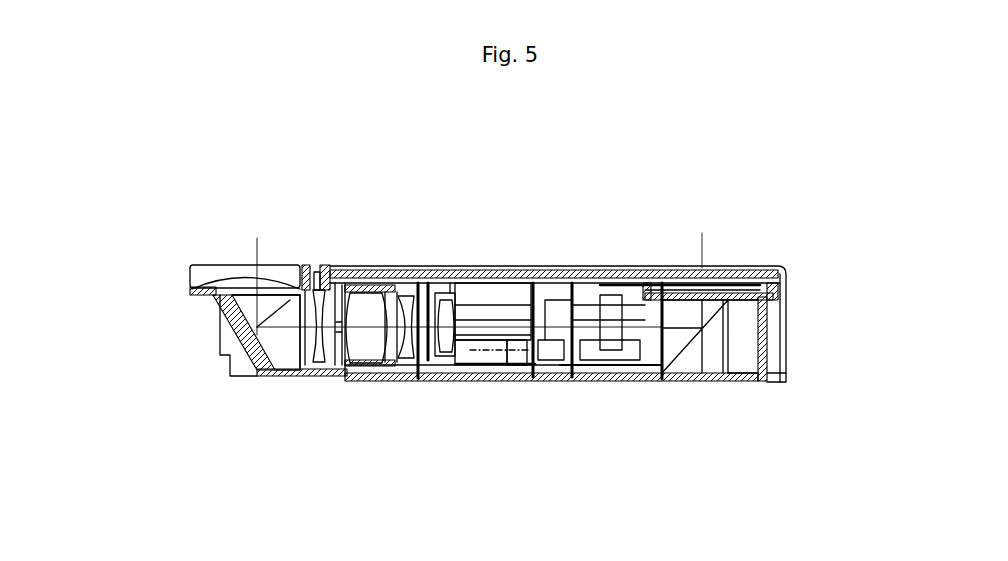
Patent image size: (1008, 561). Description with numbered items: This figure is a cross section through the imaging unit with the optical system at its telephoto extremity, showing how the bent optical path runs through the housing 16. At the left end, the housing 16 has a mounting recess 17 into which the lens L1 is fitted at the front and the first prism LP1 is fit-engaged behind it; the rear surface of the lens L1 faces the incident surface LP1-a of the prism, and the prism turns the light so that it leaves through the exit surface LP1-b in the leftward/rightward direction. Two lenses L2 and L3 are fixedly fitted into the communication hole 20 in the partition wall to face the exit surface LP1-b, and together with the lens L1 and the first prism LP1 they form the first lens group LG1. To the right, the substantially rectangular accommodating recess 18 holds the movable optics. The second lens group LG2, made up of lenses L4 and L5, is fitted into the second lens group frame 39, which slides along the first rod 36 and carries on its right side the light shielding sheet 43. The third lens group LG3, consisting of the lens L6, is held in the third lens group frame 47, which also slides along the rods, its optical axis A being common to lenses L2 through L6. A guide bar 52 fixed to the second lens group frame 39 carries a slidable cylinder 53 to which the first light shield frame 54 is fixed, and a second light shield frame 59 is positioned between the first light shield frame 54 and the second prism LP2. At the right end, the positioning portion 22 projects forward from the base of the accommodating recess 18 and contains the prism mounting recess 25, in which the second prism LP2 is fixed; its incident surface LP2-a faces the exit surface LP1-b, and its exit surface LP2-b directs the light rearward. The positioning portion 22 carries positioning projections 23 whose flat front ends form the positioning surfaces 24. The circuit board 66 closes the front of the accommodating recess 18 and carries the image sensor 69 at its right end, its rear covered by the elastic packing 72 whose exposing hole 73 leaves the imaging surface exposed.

The mounting recess 17 is at (277, 266).
The lens L1 is at (195, 292).
The first prism LP1 is at (268, 312).
The incident surface LP1-a is at (283, 270).
The exit surface LP1-b is at (303, 345).
The first lens group LG1 is at (104, 374).
The lens L2 is at (320, 338).
The lens L3 is at (336, 346).
The second lens group LG2 is at (363, 178).
The lens L4 is at (368, 268).
The lens L5 is at (410, 268).
The second lens group frame 39 is at (362, 272).
The communication hole 20 is at (346, 378).
The light shielding sheet 43 is at (415, 364).
The third lens group frame 47 is at (450, 267).
The lens L6 is at (468, 266).
The third lens group LG3 is at (495, 239).
The accommodating recess 18 is at (498, 267).
The guide bar 52 is at (458, 367).
The optical axis A is at (490, 366).
The slidable cylinder 53 is at (517, 367).
The first light shield frame 54 is at (520, 366).
The housing 16 is at (534, 380).
The circuit board 66 is at (560, 267).
The first rod 36 is at (605, 267).
The second light shield frame 59 is at (562, 378).
The second prism LP2 is at (682, 342).
The incident surface LP2-a is at (660, 352).
The exit surface LP2-b is at (715, 267).
The exposing hole 73 is at (655, 267).
The positioning projections 23 is at (685, 267).
The positioning surfaces 24 is at (770, 267).
The image sensor 69 is at (755, 267).
The packing 72 is at (772, 291).
The positioning portion 22 is at (722, 293).
The prism mounting recess 25 is at (597, 354).